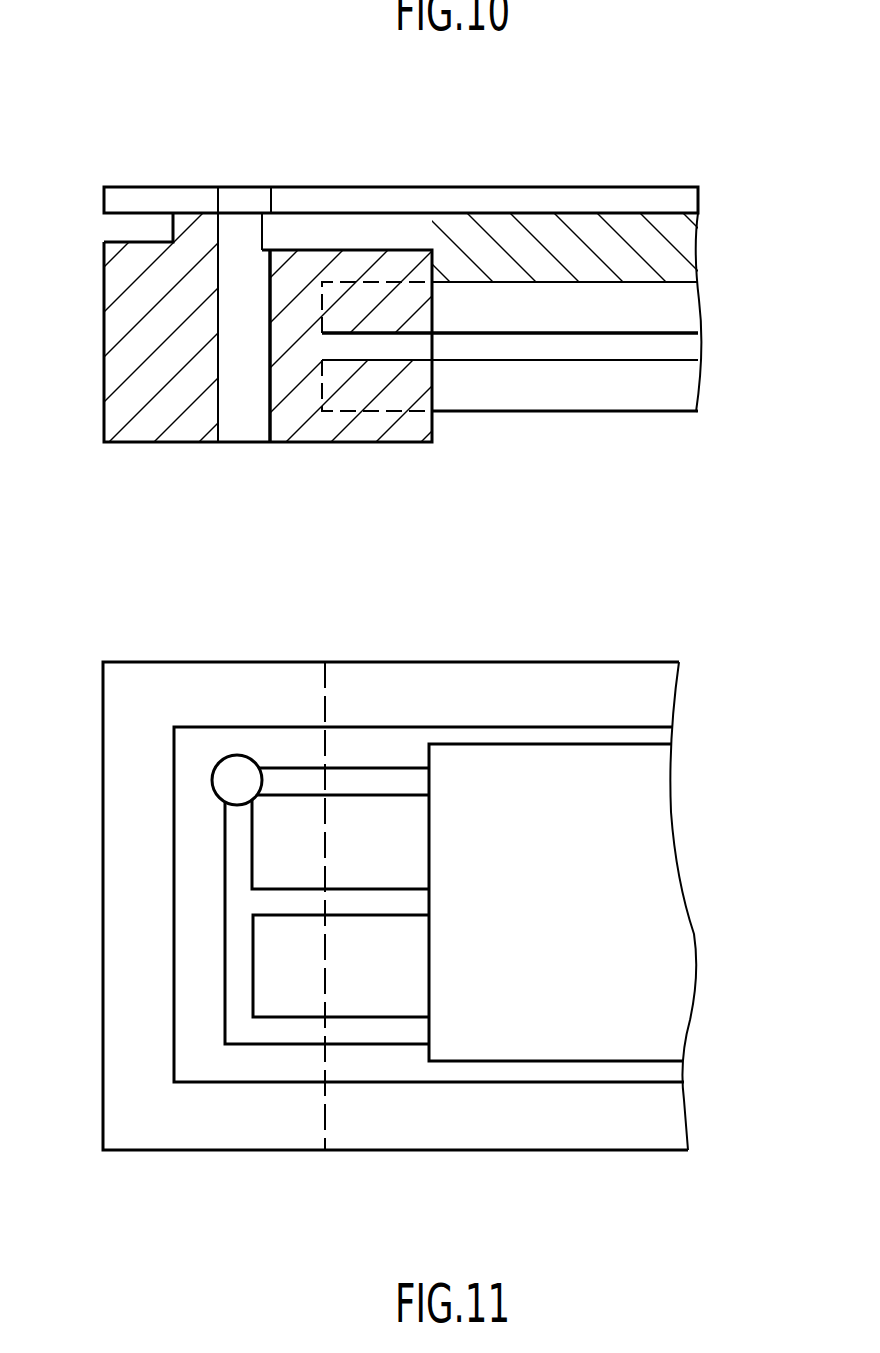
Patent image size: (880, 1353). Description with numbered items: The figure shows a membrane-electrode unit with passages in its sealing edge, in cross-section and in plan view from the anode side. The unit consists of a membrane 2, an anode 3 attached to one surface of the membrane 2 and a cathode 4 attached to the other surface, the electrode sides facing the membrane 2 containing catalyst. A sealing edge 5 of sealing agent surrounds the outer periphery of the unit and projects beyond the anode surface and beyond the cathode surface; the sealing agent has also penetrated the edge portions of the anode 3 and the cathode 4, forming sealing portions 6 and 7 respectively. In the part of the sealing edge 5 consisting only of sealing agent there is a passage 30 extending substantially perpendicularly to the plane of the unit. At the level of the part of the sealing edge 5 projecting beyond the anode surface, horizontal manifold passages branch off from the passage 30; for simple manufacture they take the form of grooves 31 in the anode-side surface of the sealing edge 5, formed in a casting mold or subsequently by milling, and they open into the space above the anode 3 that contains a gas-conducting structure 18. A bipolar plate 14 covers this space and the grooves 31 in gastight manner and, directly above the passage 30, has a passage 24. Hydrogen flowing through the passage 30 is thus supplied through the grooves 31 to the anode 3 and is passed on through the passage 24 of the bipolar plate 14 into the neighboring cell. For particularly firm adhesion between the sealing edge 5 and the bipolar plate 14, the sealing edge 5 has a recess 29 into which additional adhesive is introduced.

In FIG. 10, the membrane 2 is at (677, 347).
In FIG. 10, the anode 3 is at (668, 303).
In FIG. 10, the cathode 4 is at (673, 388).
In FIG. 10, the sealing edge 5 is at (157, 337).
In FIG. 11, the sealing edge 5 is at (197, 868).
In FIG. 10, the sealing portion 6 is at (395, 327).
In FIG. 10, the sealing portion 7 is at (367, 404).
In FIG. 10, the bipolar plate 14 is at (497, 204).
In FIG. 10, the gas-conducting structure 18 is at (682, 247).
In FIG. 11, the gas-conducting structure 18 is at (638, 867).
In FIG. 10, the passage 24 is at (250, 202).
In FIG. 10, the recess 29 is at (132, 223).
In FIG. 11, the recess 29 is at (153, 856).
In FIG. 10, the passage 30 is at (248, 385).
In FIG. 11, the passage 30 is at (228, 775).
In FIG. 10, the grooves 31 is at (328, 229).
In FIG. 11, the grooves 31 is at (240, 960).